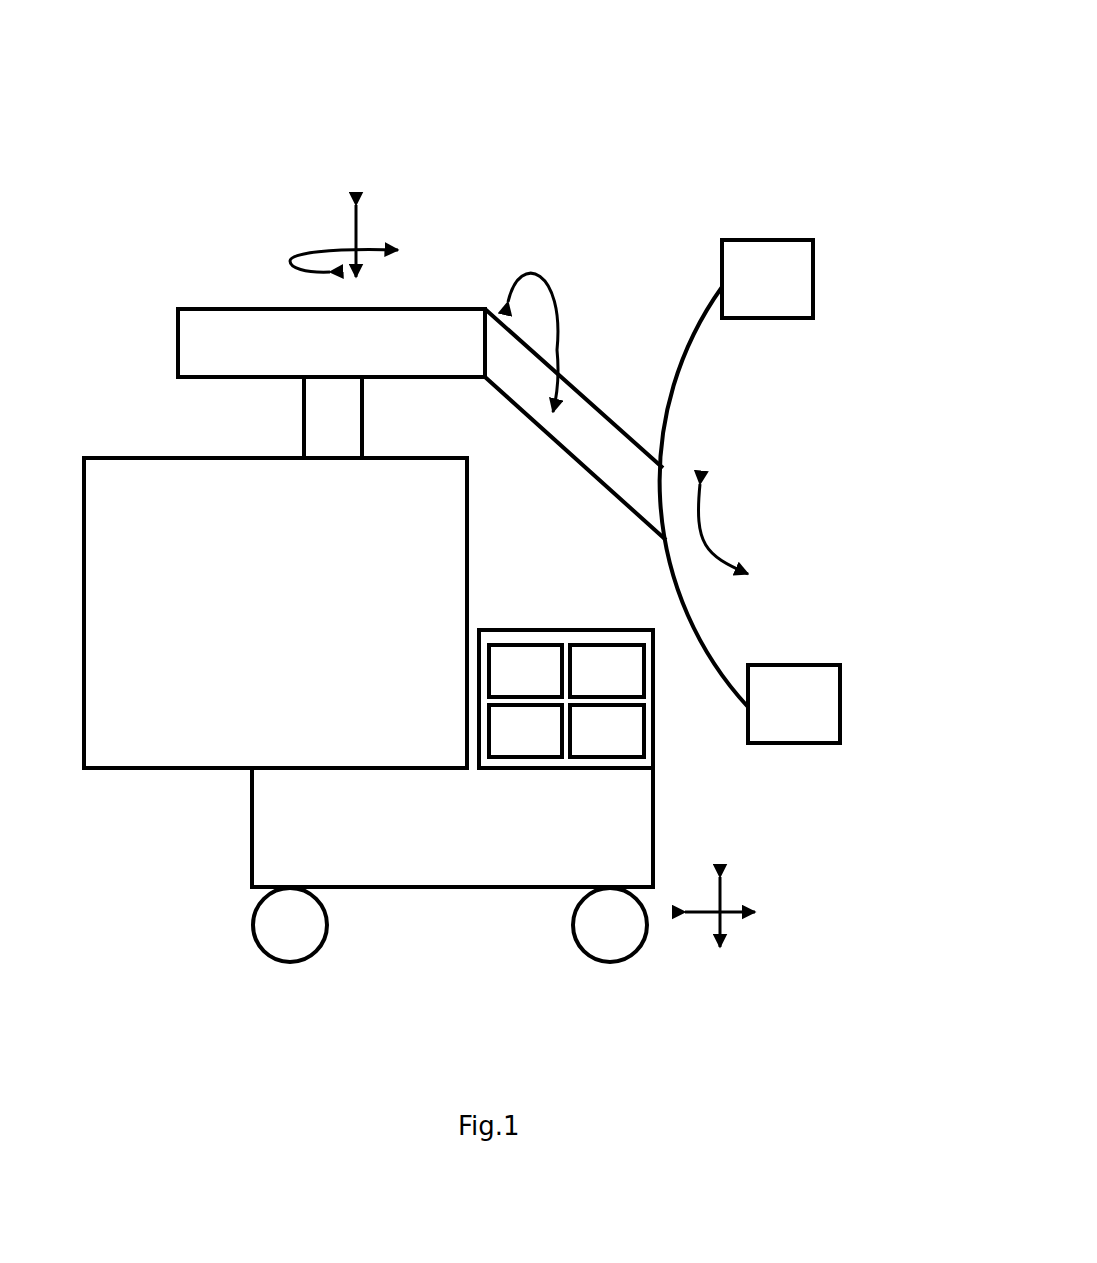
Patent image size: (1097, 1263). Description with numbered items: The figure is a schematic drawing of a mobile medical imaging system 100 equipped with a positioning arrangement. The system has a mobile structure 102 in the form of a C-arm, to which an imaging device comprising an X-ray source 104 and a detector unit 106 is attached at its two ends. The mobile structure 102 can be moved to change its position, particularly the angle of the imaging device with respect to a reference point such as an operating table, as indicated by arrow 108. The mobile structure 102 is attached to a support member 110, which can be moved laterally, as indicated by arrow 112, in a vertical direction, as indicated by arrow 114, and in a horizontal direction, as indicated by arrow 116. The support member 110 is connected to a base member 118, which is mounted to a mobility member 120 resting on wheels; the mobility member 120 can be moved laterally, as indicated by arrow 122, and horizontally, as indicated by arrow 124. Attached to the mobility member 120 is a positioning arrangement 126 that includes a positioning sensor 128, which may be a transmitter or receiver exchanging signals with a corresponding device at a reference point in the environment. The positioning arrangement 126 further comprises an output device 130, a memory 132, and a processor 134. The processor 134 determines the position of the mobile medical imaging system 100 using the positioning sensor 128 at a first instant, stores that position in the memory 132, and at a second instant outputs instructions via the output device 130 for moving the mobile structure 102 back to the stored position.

The mobile medical imaging system 100 is at (746, 118).
The mobile structure 102 is at (702, 652).
The X-ray source 104 is at (767, 240).
The detector unit 106 is at (823, 665).
The arrow 108 is at (712, 547).
The support member 110 is at (557, 443).
The arrow 112 is at (555, 325).
The arrow 114 is at (290, 263).
The arrow 116 is at (352, 226).
The base member 118 is at (140, 458).
The mobility member 120 is at (252, 848).
The arrow 122 is at (722, 893).
The arrow 124 is at (722, 928).
The positioning arrangement 126 is at (657, 680).
The positioning sensor 128 is at (635, 736).
The output device 130 is at (497, 733).
The memory 132 is at (497, 670).
The processor 134 is at (607, 652).